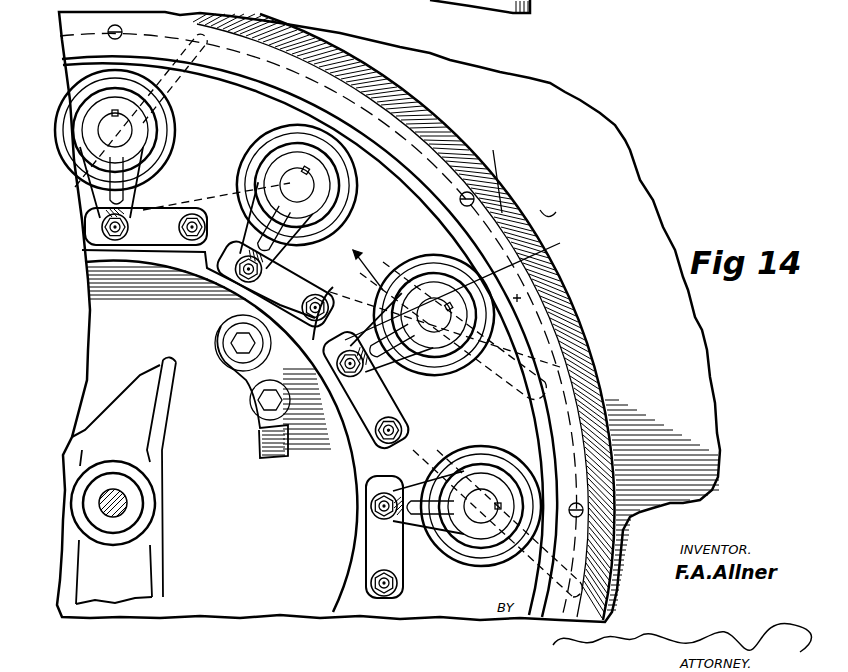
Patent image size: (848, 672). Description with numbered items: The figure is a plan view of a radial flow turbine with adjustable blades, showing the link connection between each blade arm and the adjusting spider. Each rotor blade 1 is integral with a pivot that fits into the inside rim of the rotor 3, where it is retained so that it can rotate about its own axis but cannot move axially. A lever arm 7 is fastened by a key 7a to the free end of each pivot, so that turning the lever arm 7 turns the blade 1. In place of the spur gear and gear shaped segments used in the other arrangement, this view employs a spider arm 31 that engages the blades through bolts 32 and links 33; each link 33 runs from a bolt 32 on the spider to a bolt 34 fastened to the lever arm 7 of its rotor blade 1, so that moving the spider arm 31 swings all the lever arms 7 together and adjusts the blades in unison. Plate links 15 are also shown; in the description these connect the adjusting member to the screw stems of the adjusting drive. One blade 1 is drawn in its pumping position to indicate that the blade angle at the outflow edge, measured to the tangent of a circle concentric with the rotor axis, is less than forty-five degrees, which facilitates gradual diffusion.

The rotor blade 1 is at (480, 360).
The rotor 3 is at (497, 174).
The lever arm 7 is at (288, 250).
The key 7a is at (558, 278).
The plate link 15 is at (246, 378).
The spider arm 31 is at (190, 262).
The bolt 32 is at (193, 213).
The link 33 is at (146, 226).
The bolt 34 is at (122, 216).